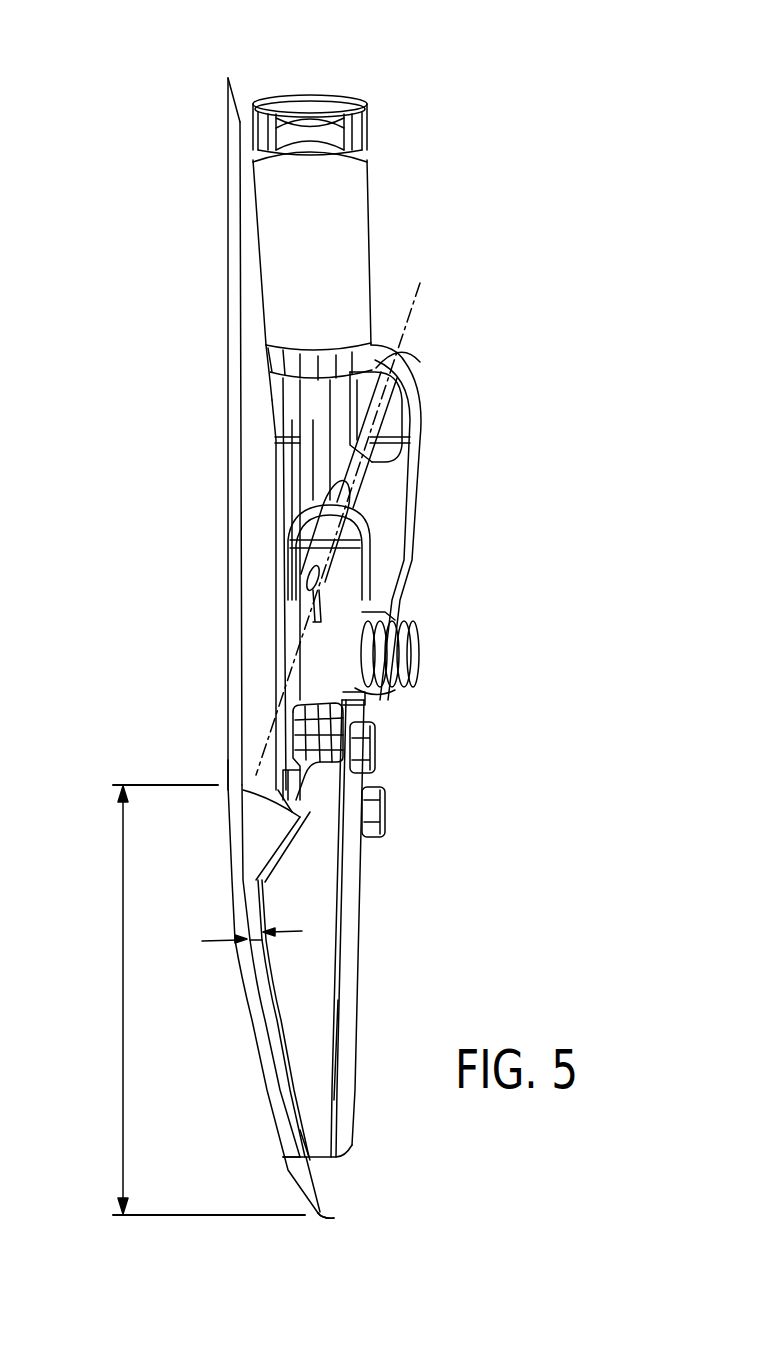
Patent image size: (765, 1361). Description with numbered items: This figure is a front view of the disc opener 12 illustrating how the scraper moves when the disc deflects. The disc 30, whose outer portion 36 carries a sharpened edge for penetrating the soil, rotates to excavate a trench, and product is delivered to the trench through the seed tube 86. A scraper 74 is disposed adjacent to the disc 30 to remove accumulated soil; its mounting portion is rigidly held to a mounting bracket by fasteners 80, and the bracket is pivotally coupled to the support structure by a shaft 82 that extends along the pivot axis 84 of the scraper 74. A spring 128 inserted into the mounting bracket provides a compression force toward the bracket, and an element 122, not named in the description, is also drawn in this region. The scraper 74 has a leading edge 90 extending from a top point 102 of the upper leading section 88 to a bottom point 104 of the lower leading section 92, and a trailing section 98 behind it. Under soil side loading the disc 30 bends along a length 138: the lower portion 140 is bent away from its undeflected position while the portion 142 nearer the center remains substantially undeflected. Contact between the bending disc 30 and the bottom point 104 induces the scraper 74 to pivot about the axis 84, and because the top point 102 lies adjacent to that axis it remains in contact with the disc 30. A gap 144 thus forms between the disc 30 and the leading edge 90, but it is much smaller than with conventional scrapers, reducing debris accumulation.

The disc opener 12 is at (557, 65).
The disc 30 is at (243, 245).
The outer portion 36 is at (236, 100).
The scraper 74 is at (348, 920).
The fasteners 80 is at (386, 808).
The shaft 82 is at (378, 428).
The pivot axis 84 is at (402, 330).
The seed tube 86 is at (342, 214).
The upper section of the leading edge 88 is at (262, 826).
The leading edge 90 is at (268, 922).
The lower section of the leading edge 92 is at (313, 1078).
The trailing section 98 is at (345, 1035).
The top point 102 is at (265, 802).
The bottom point 104 is at (300, 1157).
The pin 122 is at (312, 530).
The spring 128 is at (400, 624).
The length 138 is at (201, 1000).
The lower portion 140 is at (334, 1218).
The portion 142 is at (224, 785).
The gap 144 is at (257, 937).